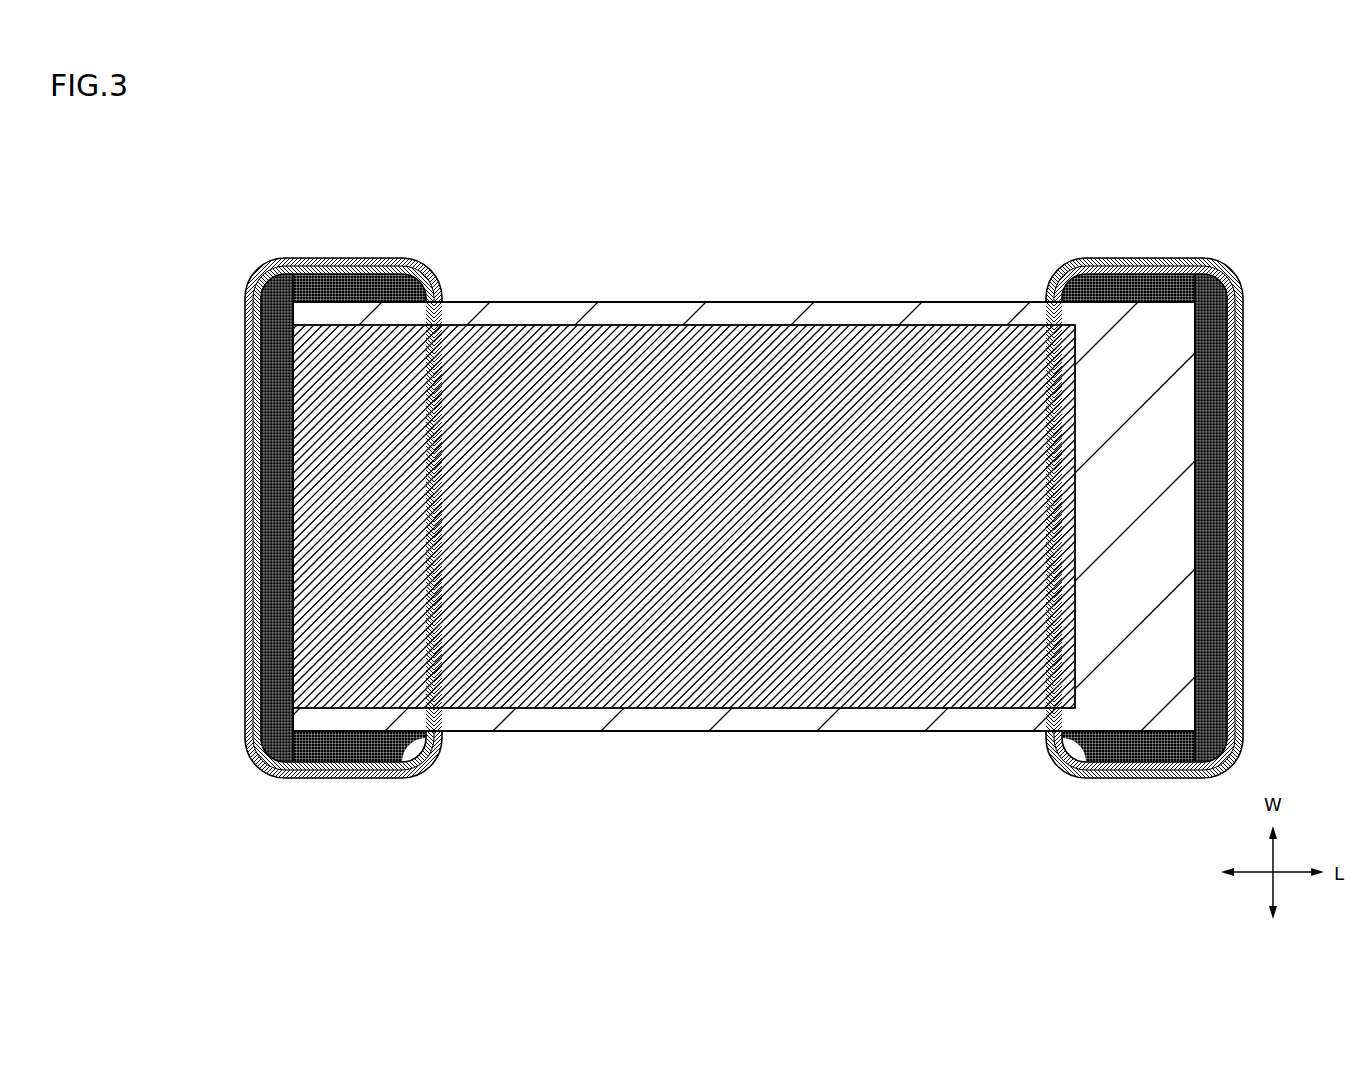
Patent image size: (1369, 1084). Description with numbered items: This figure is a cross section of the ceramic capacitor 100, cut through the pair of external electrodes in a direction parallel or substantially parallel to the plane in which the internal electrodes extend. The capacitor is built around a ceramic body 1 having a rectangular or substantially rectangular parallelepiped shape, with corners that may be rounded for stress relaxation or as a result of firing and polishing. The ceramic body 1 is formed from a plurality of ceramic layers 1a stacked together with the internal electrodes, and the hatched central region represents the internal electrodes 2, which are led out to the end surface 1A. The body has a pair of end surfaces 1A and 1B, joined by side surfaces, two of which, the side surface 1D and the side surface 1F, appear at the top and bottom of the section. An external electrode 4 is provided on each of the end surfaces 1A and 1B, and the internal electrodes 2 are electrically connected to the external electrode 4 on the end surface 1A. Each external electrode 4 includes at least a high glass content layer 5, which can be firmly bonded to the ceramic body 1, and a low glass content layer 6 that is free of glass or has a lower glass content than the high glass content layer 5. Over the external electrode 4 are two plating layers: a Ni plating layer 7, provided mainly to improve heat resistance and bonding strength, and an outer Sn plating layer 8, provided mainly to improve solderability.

The ceramic capacitor 100 is at (190, 142).
The ceramic body 1 is at (650, 303).
The side surface 1D is at (733, 284).
The side surface 1F is at (746, 750).
The end surface 1A is at (276, 540).
The end surface 1B is at (1216, 533).
The ceramic layer 1a is at (1138, 492).
The internal electrode 2 is at (378, 512).
The external electrode 4 is at (744, 454).
The high glass content layer 5 is at (278, 290).
The low glass content layer 6 is at (342, 273).
The Ni plating layer 7 is at (375, 268).
The Sn plating layer 8 is at (397, 260).